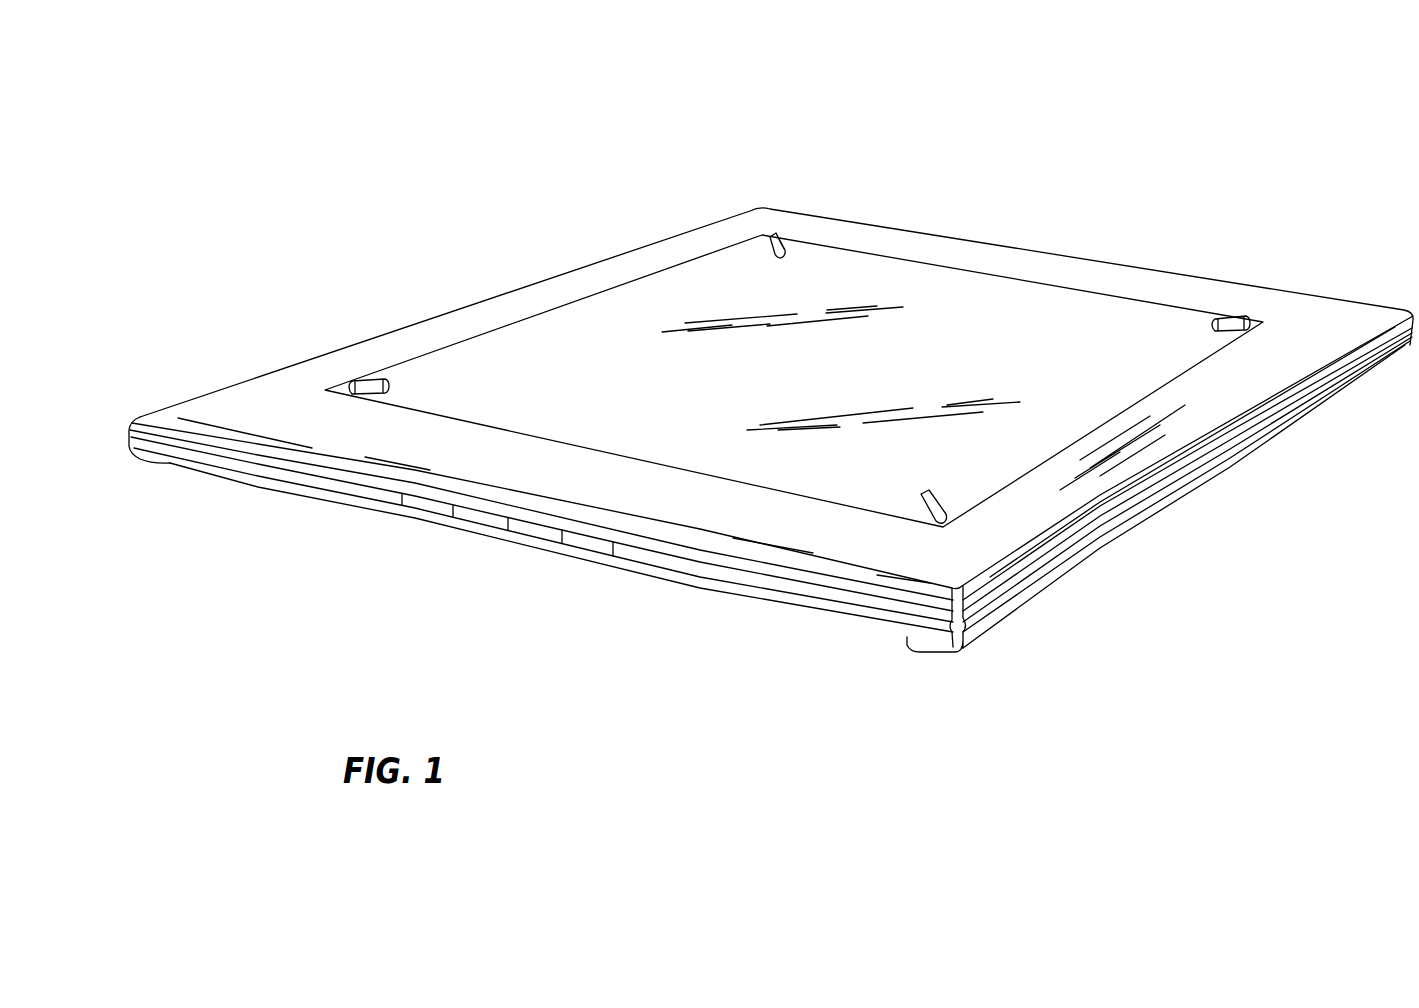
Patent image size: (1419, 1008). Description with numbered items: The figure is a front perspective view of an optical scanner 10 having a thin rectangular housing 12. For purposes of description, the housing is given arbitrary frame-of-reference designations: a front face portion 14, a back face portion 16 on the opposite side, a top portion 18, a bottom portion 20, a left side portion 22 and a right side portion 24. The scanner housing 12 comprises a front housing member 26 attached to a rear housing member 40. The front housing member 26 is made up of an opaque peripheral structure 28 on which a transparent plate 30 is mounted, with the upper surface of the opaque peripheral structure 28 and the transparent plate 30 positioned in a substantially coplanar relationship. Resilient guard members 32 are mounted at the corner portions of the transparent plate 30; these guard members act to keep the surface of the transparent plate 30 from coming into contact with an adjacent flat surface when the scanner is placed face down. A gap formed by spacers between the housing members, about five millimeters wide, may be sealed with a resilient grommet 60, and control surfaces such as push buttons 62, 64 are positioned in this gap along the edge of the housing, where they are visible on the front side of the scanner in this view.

The optical scanner 10 is at (412, 124).
The housing 12 is at (464, 292).
The front face portion 14 is at (676, 288).
The back face portion 16 is at (722, 600).
The top portion 18 is at (1195, 448).
The bottom portion 20 is at (605, 268).
The left side portion 22 is at (1044, 262).
The right side portion 24 is at (325, 458).
The front housing member 26 is at (220, 410).
The opaque peripheral structure 28 is at (275, 403).
The transparent plate 30 is at (543, 337).
The resilient guard members 32 is at (790, 240).
The rear housing member 40 is at (688, 580).
The resilient grommet 60 is at (1113, 528).
The push button 62 is at (425, 507).
The push button 64 is at (480, 520).